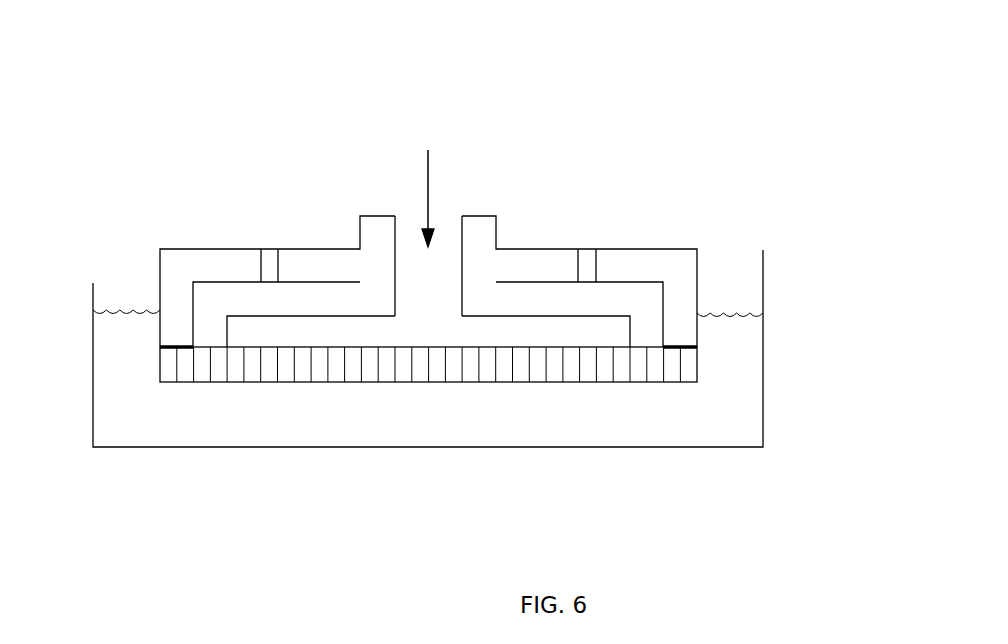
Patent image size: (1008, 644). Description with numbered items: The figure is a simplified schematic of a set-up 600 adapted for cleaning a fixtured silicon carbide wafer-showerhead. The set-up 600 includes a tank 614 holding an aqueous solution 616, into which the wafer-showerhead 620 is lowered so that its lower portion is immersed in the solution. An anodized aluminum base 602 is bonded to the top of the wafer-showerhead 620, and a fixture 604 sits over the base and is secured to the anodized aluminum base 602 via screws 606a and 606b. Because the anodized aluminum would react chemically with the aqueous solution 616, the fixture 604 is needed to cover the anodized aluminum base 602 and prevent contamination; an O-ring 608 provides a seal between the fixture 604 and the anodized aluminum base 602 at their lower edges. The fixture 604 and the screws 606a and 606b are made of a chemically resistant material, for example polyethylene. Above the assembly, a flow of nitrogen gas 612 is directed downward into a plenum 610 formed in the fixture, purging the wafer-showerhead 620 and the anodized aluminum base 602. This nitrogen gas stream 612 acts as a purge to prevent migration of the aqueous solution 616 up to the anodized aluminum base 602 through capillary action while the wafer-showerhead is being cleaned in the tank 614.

The set-up 600 is at (496, 77).
The anodized aluminum base 602 is at (615, 305).
The fixture 604 is at (698, 280).
The screw 606a is at (587, 249).
The screw 606b is at (267, 250).
The O-ring 608 is at (177, 346).
The plenum 610 is at (436, 267).
The flow of nitrogen gas 612 is at (430, 150).
The tank 614 is at (92, 397).
The aqueous solution 616 is at (192, 427).
The wafer-showerhead 620 is at (683, 383).